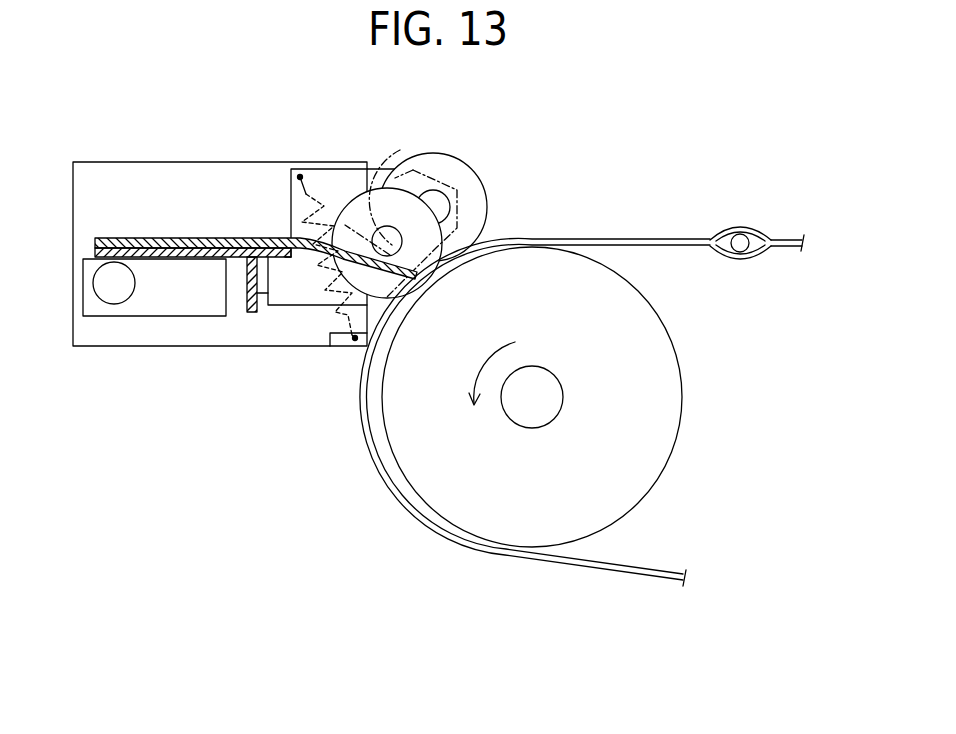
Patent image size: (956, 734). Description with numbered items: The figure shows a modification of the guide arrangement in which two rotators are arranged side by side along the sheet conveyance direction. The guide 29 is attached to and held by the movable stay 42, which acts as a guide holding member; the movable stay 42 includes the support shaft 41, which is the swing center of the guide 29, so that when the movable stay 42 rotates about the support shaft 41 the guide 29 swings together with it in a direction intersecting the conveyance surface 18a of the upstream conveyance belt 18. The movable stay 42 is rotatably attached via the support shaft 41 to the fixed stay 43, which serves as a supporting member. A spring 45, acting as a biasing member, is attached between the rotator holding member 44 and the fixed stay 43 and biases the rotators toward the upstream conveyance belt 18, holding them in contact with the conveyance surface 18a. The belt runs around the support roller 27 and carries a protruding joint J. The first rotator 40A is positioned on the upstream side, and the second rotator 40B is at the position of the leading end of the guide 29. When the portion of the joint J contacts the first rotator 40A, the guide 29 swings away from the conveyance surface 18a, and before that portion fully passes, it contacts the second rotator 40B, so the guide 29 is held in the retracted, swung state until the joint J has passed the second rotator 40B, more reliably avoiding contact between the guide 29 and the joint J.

The upstream conveyance belt 18 is at (582, 386).
The conveyance surface 18a is at (530, 240).
The support roller 27 is at (470, 508).
The guide 29 is at (183, 237).
The first rotator 40A is at (462, 170).
The second rotator 40B is at (399, 195).
The support shaft 41 is at (116, 291).
The movable stay 42 is at (190, 316).
The fixed stay 43 is at (253, 346).
The rotator holding member 44 is at (322, 169).
The spring 45 is at (320, 310).
The joint J is at (752, 215).